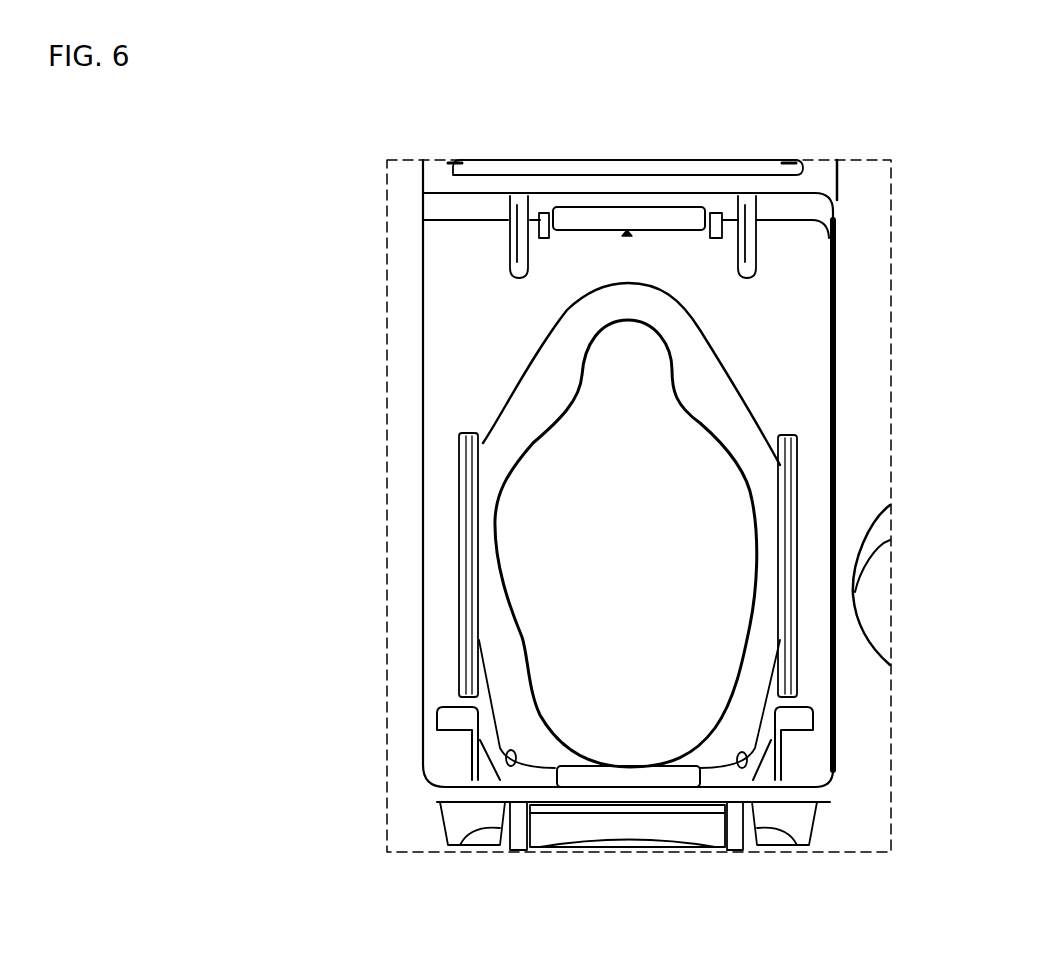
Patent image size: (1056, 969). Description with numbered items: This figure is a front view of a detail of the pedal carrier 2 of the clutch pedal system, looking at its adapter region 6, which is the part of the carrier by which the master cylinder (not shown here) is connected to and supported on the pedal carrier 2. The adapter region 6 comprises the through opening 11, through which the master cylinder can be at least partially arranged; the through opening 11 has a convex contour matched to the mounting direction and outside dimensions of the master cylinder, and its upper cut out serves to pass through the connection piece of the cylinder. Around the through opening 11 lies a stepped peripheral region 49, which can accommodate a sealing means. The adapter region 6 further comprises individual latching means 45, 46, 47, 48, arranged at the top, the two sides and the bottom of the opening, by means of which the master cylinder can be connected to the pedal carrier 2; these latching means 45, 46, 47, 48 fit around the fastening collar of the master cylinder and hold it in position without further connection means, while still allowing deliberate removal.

The pedal carrier 2 is at (855, 340).
The adapter region 6 is at (262, 640).
The through opening 11 is at (606, 573).
The latching means 45 is at (668, 222).
The latching means 46 is at (780, 600).
The latching means 47 is at (630, 773).
The latching means 48 is at (470, 520).
The stepped peripheral region 49 is at (719, 408).